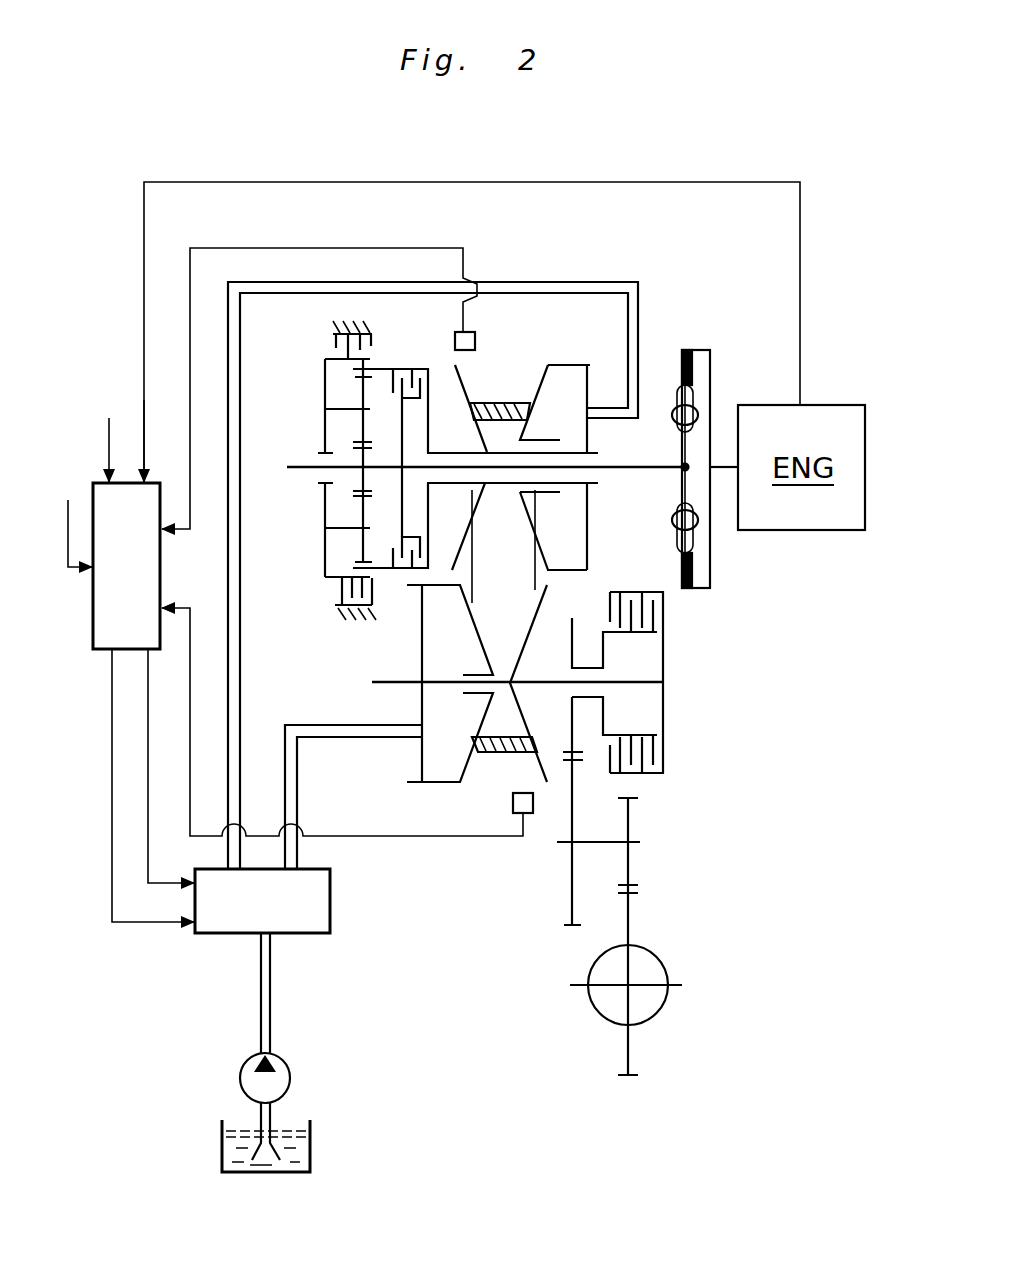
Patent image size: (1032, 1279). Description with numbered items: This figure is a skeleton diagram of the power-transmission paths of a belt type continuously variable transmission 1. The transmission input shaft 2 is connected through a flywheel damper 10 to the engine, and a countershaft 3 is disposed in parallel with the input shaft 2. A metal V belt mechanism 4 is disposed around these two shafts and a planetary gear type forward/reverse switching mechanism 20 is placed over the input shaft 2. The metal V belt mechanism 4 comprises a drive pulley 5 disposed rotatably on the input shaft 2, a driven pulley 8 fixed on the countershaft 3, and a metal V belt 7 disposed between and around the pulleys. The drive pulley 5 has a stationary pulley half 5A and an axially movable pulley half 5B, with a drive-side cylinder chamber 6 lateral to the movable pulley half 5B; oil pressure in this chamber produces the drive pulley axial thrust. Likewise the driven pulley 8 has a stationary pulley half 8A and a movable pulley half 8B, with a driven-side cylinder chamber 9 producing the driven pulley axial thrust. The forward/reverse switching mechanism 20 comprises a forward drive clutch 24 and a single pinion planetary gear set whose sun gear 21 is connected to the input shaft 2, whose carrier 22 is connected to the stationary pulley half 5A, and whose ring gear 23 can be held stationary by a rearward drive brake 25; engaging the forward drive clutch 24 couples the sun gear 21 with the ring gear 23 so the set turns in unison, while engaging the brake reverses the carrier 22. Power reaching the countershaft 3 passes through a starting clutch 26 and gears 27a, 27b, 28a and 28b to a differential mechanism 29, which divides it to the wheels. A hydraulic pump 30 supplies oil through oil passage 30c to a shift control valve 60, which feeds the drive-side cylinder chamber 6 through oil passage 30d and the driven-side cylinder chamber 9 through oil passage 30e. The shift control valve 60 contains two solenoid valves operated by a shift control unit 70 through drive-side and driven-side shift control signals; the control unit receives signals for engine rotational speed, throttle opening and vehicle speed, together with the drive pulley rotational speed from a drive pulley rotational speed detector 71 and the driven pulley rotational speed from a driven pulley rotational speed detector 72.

The belt type continuously variable transmission 1 is at (628, 170).
The transmission input shaft 2 is at (287, 463).
The countershaft 3 is at (379, 686).
The metal V belt mechanism 4 is at (406, 618).
The drive pulley 5 is at (525, 449).
The stationary pulley half 5A is at (461, 382).
The movable pulley half 5B is at (574, 363).
The drive-side cylinder chamber 6 is at (571, 425).
The metal V belt 7 is at (506, 586).
The driven pulley 8 is at (477, 706).
The stationary pulley half 8A is at (544, 722).
The movable pulley half 8B is at (433, 785).
The driven-side cylinder chamber 9 is at (458, 740).
The flywheel damper 10 is at (696, 349).
The planetary gear type forward/reverse switching mechanism 20 is at (300, 350).
The sun gear 21 is at (367, 458).
The carrier 22 is at (367, 542).
The ring gear 23 is at (325, 386).
The forward drive clutch 24 is at (415, 357).
The rearward drive brake 25 is at (333, 600).
The starting clutch 26 is at (620, 774).
The gear 27a is at (581, 610).
The gear 27b is at (573, 927).
The gear 28a is at (632, 800).
The gear 28b is at (633, 1078).
The differential mechanism 29 is at (665, 1003).
The hydraulic pump 30 is at (290, 1080).
The oil passage 30c is at (272, 1000).
The oil passage 30d is at (594, 280).
The oil passage 30e is at (350, 742).
The shift control valve 60 is at (331, 908).
The shift control unit 70 is at (93, 638).
The drive pulley rotational speed detector 71 is at (476, 338).
The driven pulley rotational speed detector 72 is at (534, 800).